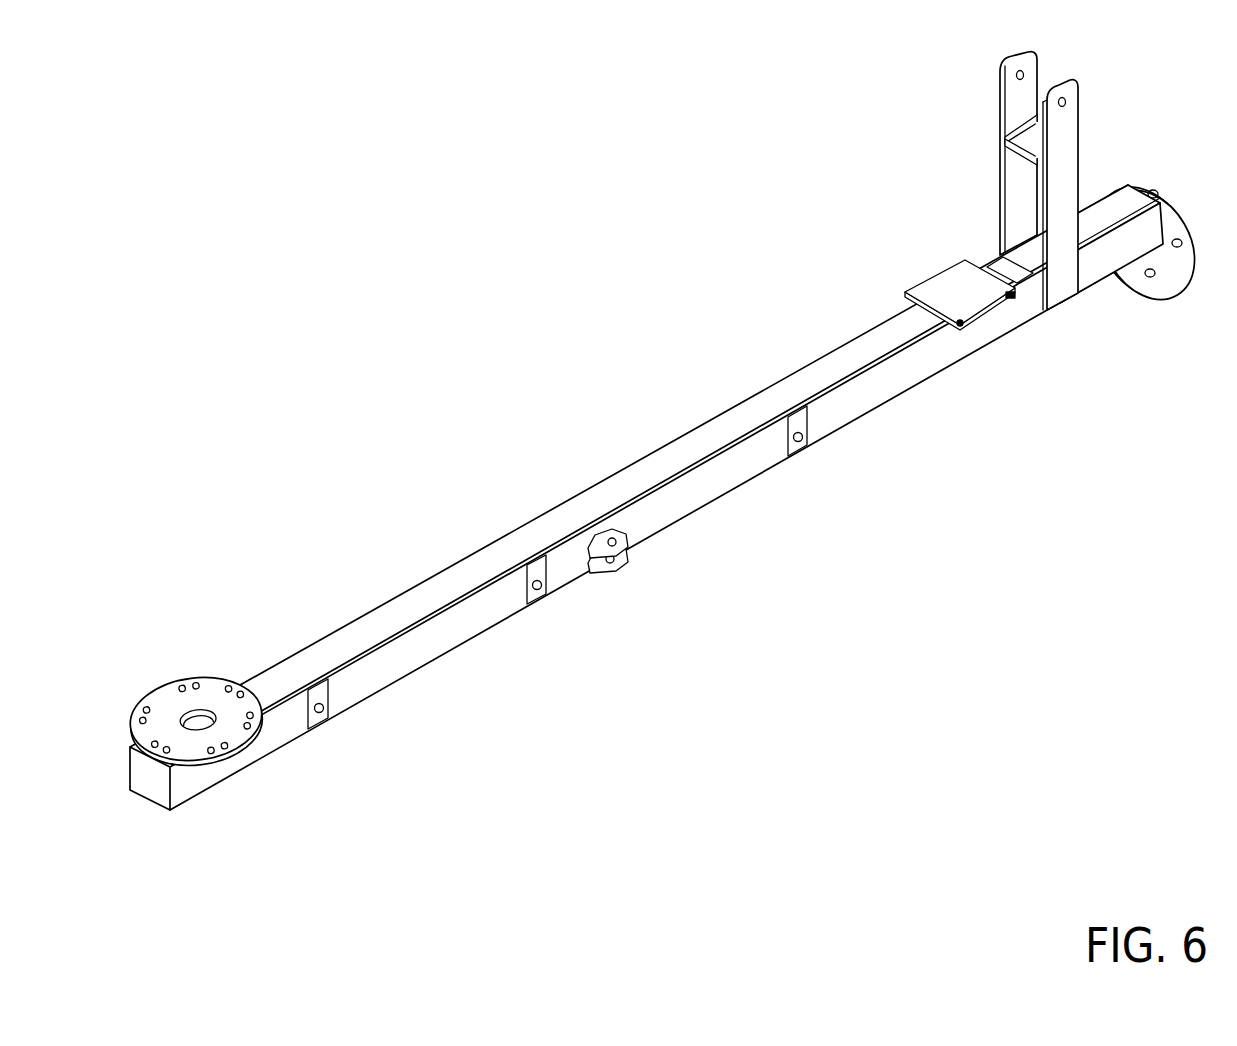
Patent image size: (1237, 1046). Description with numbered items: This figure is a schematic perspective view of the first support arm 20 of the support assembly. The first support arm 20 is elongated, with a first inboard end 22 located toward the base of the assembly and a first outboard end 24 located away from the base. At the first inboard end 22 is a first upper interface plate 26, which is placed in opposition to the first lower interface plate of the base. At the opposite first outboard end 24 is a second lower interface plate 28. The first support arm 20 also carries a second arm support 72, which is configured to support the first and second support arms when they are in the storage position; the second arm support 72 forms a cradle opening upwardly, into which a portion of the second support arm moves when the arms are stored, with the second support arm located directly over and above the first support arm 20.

The first support arm 20 is at (472, 573).
The first inboard end 22 is at (1115, 203).
The first outboard end 24 is at (190, 782).
The first upper interface plate 26 is at (1168, 262).
The second lower interface plate 28 is at (158, 707).
The second arm support 72 is at (1067, 141).